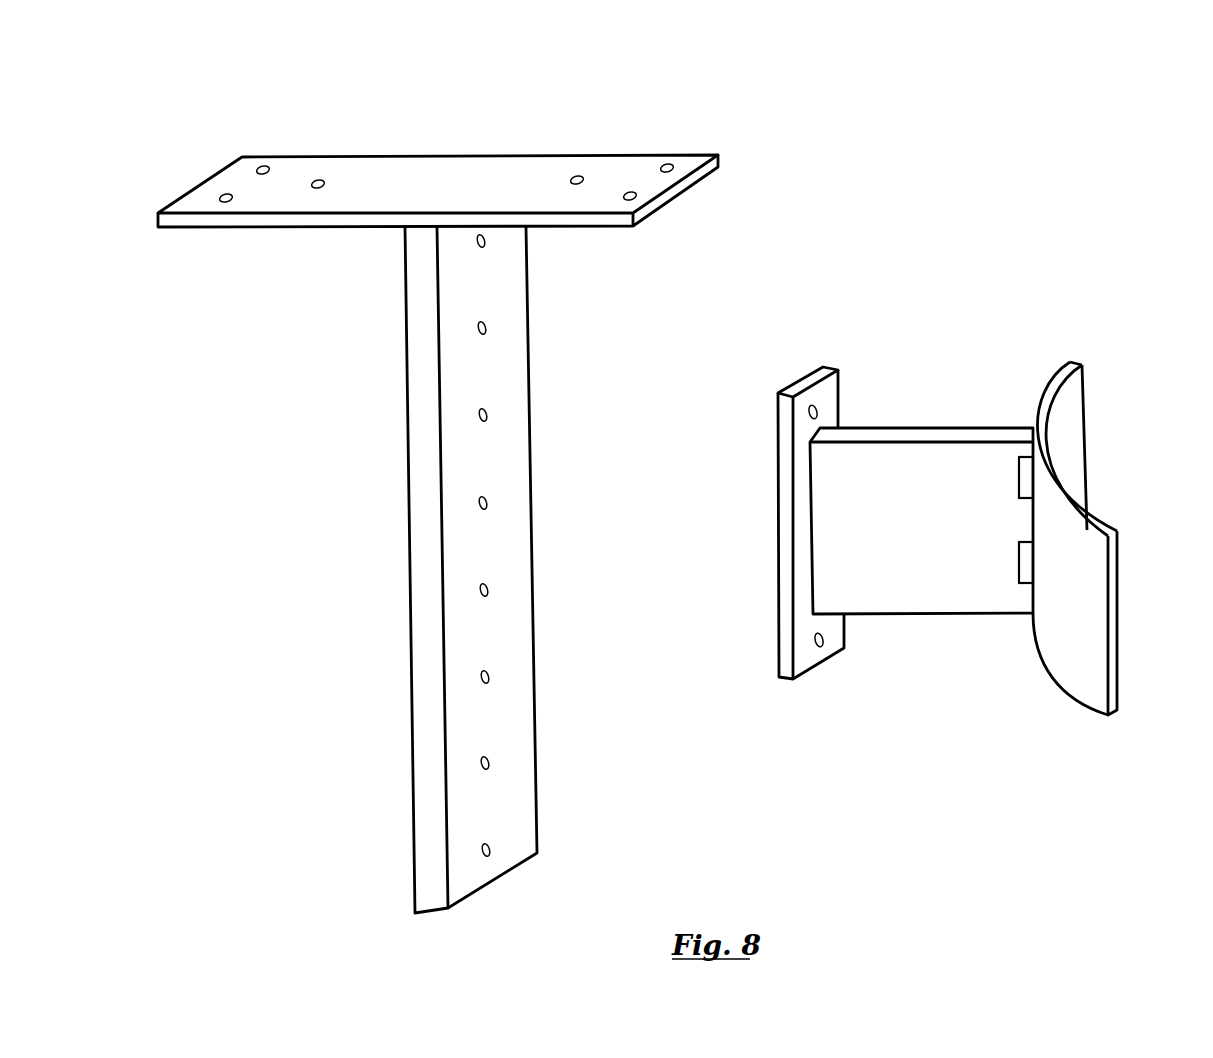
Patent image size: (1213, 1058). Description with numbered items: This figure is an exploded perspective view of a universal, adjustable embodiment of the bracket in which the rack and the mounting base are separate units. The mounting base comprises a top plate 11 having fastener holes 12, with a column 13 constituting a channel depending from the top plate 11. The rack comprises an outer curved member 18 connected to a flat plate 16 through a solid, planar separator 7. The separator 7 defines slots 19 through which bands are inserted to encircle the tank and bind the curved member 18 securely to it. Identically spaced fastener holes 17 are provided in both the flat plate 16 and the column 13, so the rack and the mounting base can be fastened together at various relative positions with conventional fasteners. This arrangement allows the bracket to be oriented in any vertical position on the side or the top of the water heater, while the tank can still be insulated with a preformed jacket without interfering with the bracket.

The separator 7 is at (872, 483).
The top plate 11 is at (405, 183).
The fastener holes 12 is at (265, 170).
The column 13 is at (470, 538).
The flat plate 16 is at (828, 394).
The fastener holes 17 is at (492, 763).
The outer curved member 18 is at (1062, 437).
The slots 19 is at (1022, 568).